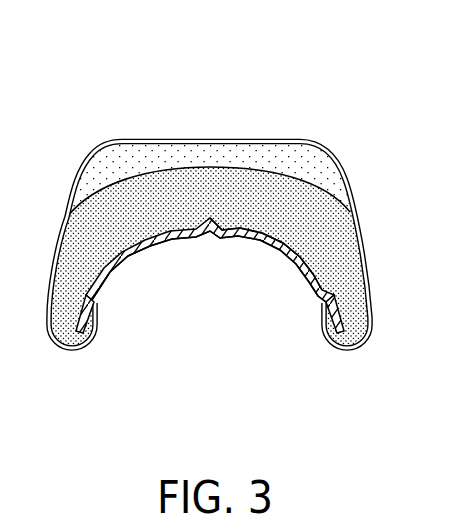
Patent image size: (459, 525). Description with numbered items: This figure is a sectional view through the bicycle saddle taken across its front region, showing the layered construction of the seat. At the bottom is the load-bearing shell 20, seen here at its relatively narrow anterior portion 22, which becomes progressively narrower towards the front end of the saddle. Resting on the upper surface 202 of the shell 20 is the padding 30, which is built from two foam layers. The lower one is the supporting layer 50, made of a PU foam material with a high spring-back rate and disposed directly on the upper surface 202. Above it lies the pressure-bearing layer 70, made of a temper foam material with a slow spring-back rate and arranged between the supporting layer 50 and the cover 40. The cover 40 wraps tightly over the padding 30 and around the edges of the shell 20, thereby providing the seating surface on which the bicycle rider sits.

The load-bearing shell 20 is at (250, 258).
The upper surface 202 is at (280, 213).
The anterior portion 22 is at (167, 244).
The padding 30 is at (205, 183).
The cover 40 is at (237, 122).
The supporting layer 50 is at (103, 192).
The pressure-bearing layer 70 is at (129, 150).